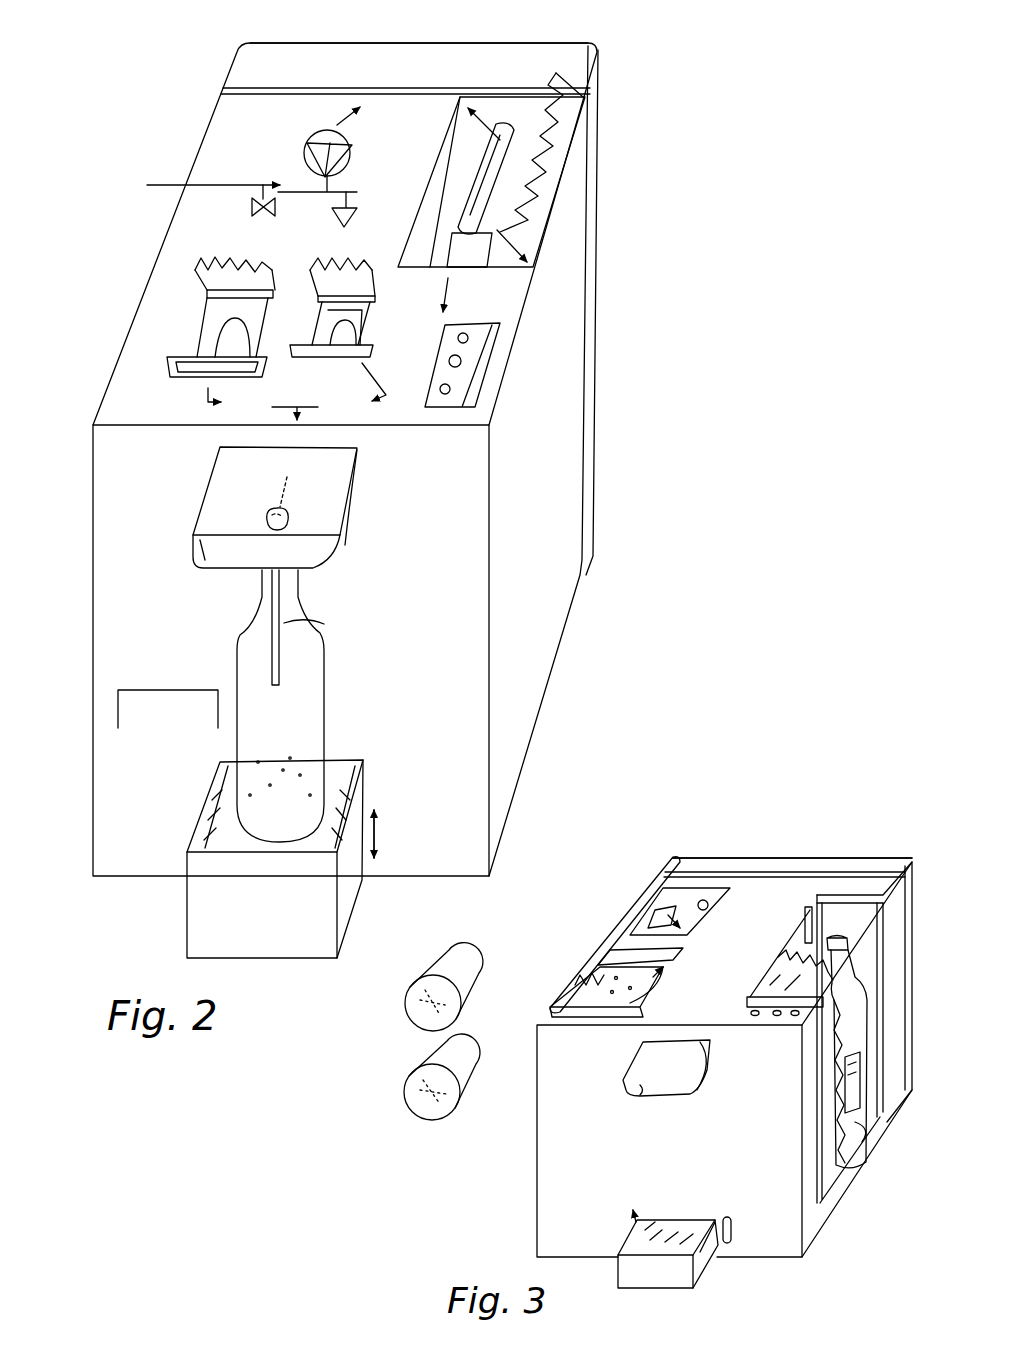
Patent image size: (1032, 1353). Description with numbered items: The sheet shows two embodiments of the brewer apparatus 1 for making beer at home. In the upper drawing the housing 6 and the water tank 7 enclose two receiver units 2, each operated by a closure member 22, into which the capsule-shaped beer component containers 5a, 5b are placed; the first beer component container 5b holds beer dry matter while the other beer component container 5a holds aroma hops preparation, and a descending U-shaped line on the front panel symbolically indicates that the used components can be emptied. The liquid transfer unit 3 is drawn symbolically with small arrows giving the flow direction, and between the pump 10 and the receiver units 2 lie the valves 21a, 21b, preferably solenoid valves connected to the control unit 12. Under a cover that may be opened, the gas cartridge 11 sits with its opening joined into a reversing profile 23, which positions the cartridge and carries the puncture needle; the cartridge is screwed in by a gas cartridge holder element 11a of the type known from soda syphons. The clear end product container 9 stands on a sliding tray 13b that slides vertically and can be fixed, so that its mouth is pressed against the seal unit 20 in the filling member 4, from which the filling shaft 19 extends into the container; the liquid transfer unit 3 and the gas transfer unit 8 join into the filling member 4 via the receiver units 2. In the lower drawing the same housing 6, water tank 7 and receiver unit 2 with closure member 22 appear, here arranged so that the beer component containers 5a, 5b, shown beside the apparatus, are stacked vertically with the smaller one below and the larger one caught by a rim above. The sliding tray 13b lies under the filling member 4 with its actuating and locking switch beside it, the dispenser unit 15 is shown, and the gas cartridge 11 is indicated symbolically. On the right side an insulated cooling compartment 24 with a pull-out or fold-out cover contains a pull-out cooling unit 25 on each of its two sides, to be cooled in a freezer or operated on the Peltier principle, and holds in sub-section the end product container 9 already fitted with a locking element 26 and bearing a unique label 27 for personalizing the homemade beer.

In FIG. 2, the brewer apparatus 1 is at (176, 138).
In FIG. 3, the brewer apparatus 1 is at (637, 880).
In FIG. 2, the receiver unit 2 is at (207, 313).
In FIG. 3, the receiver unit 2 is at (532, 1024).
In FIG. 2, the liquid transfer unit 3 is at (199, 186).
In FIG. 2, the filling member 4 is at (318, 510).
In FIG. 3, the filling member 4 is at (623, 1080).
In FIG. 2, the beer component container 5a is at (370, 327).
In FIG. 3, the beer component container 5a is at (436, 1104).
In FIG. 2, the beer component container 5b is at (197, 353).
In FIG. 3, the beer component container 5b is at (415, 1010).
In FIG. 2, the housing 6 is at (560, 445).
In FIG. 3, the housing 6 is at (540, 1052).
In FIG. 2, the water tank 7 is at (564, 52).
In FIG. 3, the water tank 7 is at (683, 860).
In FIG. 2, the gas transfer unit 8 is at (455, 300).
In FIG. 2, the end product container 9 is at (307, 687).
In FIG. 3, the end product container 9 is at (854, 1073).
In FIG. 2, the pump 10 is at (350, 150).
In FIG. 2, the gas cartridge 11 is at (507, 138).
In FIG. 3, the gas cartridge 11 is at (662, 912).
In FIG. 2, the gas cartridge holder element 11a is at (507, 200).
In FIG. 2, the control unit 12 is at (483, 358).
In FIG. 2, the sliding tray 13b is at (205, 838).
In FIG. 3, the sliding tray 13b is at (618, 1252).
In FIG. 3, the dispenser unit 15 is at (622, 950).
In FIG. 2, the filling shaft 19 is at (300, 625).
In FIG. 2, the seal unit 20 is at (338, 532).
In FIG. 2, the valve 21a is at (356, 210).
In FIG. 2, the valve 21b is at (247, 208).
In FIG. 2, the closure member 22 is at (210, 287).
In FIG. 3, the closure member 22 is at (578, 985).
In FIG. 2, the reversing profile 23 is at (480, 240).
In FIG. 3, the cooling compartment 24 is at (807, 925).
In FIG. 3, the cooling unit 25 is at (850, 923).
In FIG. 3, the locking element 26 is at (840, 943).
In FIG. 3, the label 27 is at (868, 1130).